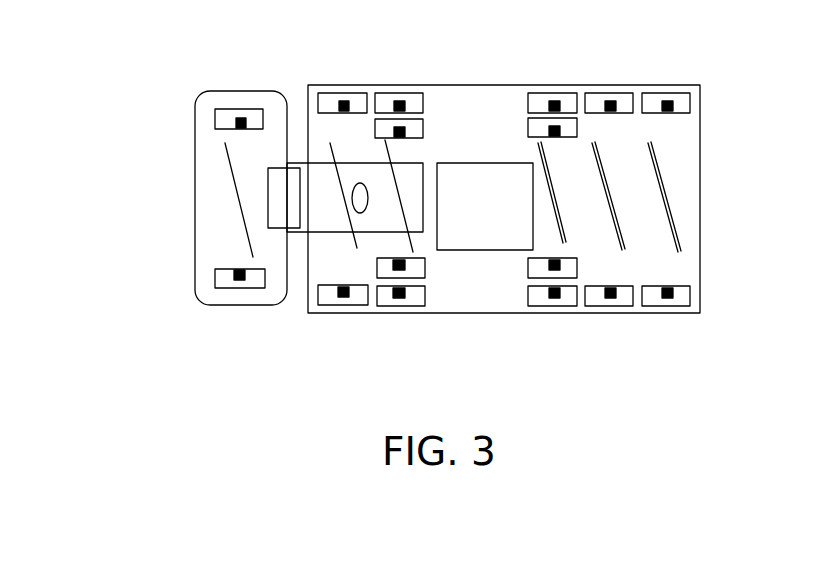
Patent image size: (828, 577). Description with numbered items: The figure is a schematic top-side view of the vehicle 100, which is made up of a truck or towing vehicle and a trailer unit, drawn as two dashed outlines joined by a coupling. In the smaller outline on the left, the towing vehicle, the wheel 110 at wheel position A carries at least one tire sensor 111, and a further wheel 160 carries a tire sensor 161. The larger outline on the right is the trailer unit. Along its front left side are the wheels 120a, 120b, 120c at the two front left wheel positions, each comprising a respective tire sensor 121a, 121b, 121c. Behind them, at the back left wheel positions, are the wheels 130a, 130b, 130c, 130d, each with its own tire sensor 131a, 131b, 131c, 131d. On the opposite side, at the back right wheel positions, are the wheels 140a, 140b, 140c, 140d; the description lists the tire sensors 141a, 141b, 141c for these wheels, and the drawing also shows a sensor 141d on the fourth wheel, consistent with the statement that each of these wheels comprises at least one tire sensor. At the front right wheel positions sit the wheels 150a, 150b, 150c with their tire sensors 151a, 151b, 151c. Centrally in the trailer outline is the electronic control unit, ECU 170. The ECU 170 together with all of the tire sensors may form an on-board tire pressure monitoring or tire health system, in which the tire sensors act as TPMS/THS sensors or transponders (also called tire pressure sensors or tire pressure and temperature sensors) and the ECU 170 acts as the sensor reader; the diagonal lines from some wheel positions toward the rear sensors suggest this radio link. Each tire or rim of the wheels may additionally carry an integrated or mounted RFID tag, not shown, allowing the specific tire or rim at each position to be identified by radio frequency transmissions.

The vehicle 100 is at (175, 80).
The wheel 110 is at (240, 289).
The tire sensor 111 is at (238, 274).
The wheel 120a is at (334, 313).
The wheel 120b is at (404, 306).
The wheel 120c is at (390, 300).
The tire sensor 121a is at (343, 286).
The tire sensor 121b is at (404, 298).
The tire sensor 121c is at (404, 266).
The wheel 130a is at (558, 314).
The wheel 130b is at (580, 313).
The wheel 130c is at (618, 313).
The wheel 130d is at (669, 313).
The tire sensor 131a is at (545, 313).
The tire sensor 131b is at (554, 262).
The tire sensor 131c is at (610, 287).
The tire sensor 131d is at (667, 287).
The wheel 140a is at (552, 92).
The wheel 140b is at (578, 112).
The wheel 140c is at (610, 92).
The wheel 140d is at (665, 92).
The tire sensor 141a is at (552, 104).
The tire sensor 141b is at (555, 137).
The tire sensor 141c is at (610, 113).
The side antenna 141d is at (667, 113).
The wheel 150a is at (344, 92).
The wheel 150b is at (410, 92).
The wheel 150c is at (390, 110).
The tire sensor 151a is at (344, 112).
The tire sensor 151b is at (402, 106).
The tire sensor 151c is at (402, 131).
The wheel 160 is at (240, 109).
The tire sensor 161 is at (242, 129).
The ECU 170 is at (503, 205).